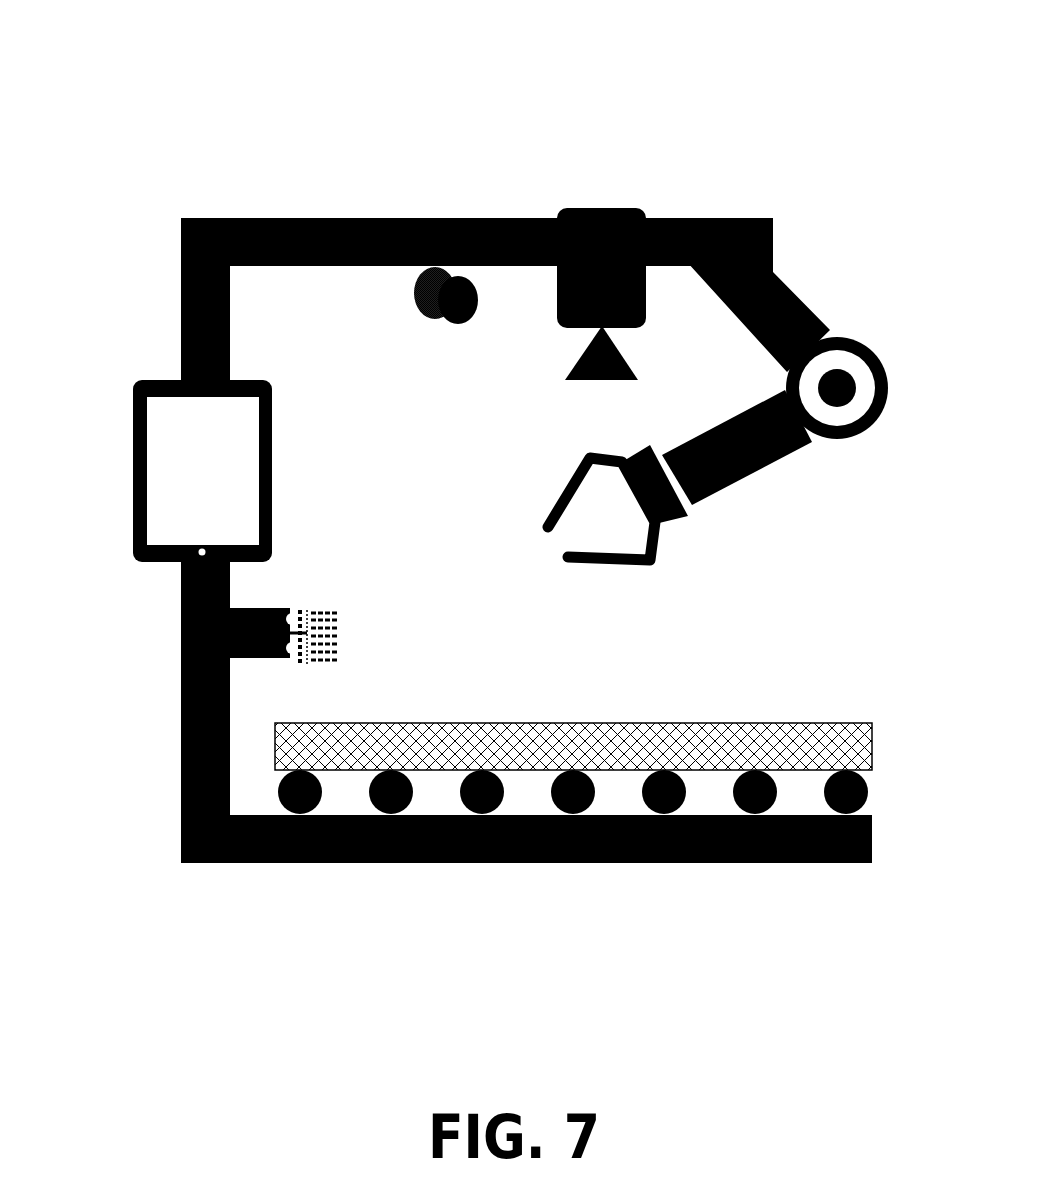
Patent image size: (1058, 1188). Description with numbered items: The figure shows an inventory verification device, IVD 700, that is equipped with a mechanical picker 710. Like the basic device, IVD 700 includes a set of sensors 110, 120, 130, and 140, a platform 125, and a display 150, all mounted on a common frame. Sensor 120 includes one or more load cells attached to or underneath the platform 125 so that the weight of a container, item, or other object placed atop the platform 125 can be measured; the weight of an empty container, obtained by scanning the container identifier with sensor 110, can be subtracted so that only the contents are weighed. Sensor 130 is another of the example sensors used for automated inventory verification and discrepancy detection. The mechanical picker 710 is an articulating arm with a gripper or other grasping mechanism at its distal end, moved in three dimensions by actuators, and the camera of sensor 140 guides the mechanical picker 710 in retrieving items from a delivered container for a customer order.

The IVD 700 is at (508, 44).
The sensor 140 is at (634, 183).
The mechanical picker 710 is at (834, 306).
The sensor 130 is at (402, 308).
The display 150 is at (116, 492).
The sensor 110 is at (291, 595).
The platform 125 is at (889, 716).
The sensor 120 is at (882, 783).